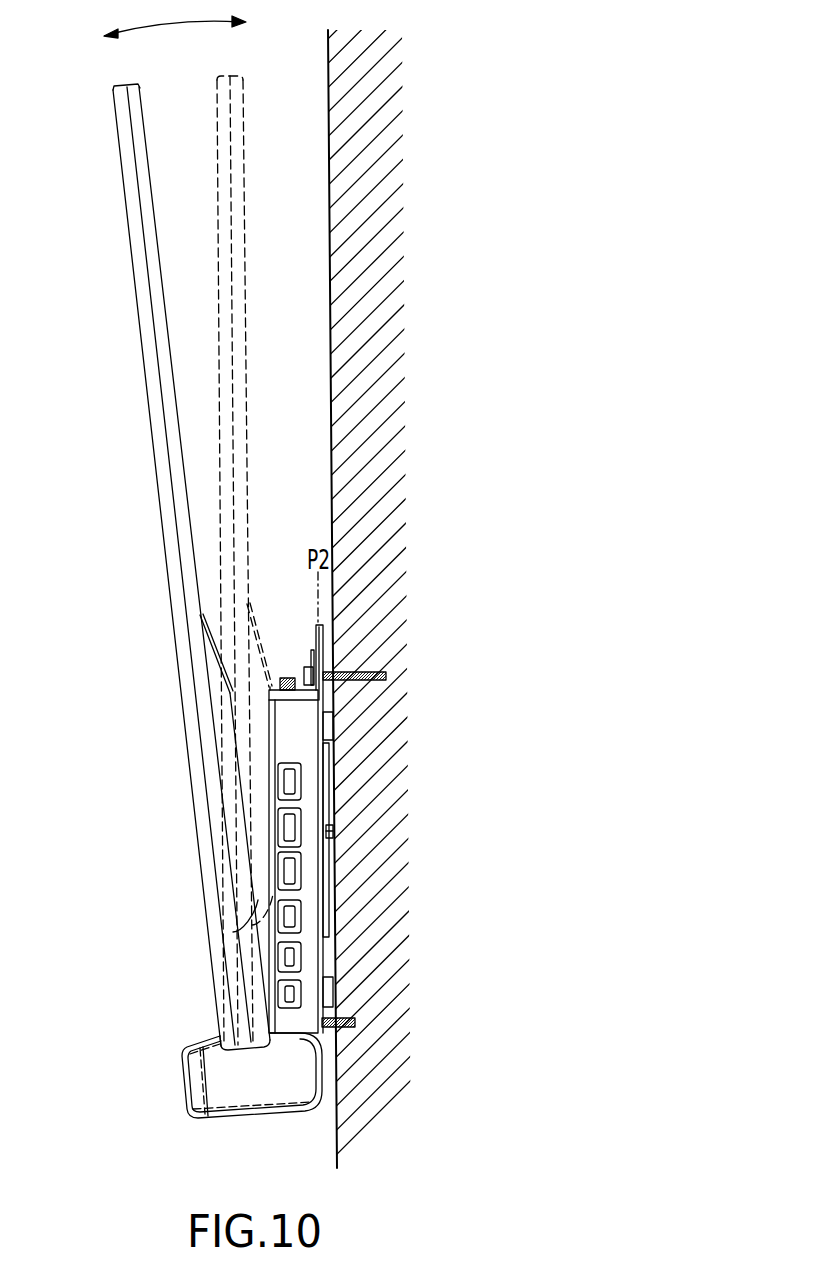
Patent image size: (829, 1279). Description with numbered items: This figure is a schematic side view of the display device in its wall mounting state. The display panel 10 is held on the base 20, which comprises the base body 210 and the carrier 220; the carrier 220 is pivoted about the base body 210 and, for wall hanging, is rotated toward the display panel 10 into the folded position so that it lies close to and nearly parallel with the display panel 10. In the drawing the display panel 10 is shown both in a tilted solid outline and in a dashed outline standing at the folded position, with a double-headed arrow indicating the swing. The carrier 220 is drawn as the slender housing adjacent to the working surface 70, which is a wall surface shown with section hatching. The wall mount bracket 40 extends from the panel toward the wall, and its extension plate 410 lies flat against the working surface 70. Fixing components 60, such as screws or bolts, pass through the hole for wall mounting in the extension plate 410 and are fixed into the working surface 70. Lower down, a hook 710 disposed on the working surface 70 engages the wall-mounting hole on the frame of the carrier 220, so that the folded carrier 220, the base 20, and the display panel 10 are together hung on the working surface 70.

The display panel 10 is at (118, 111).
The base 20 is at (197, 1075).
The base body 210 is at (194, 1069).
The wall mount bracket 40 is at (302, 641).
The extension plate 410 is at (317, 624).
The fixing components 60 is at (389, 678).
The working surface 70 is at (326, 51).
The carrier 220 is at (324, 800).
The hook 710 is at (358, 1022).